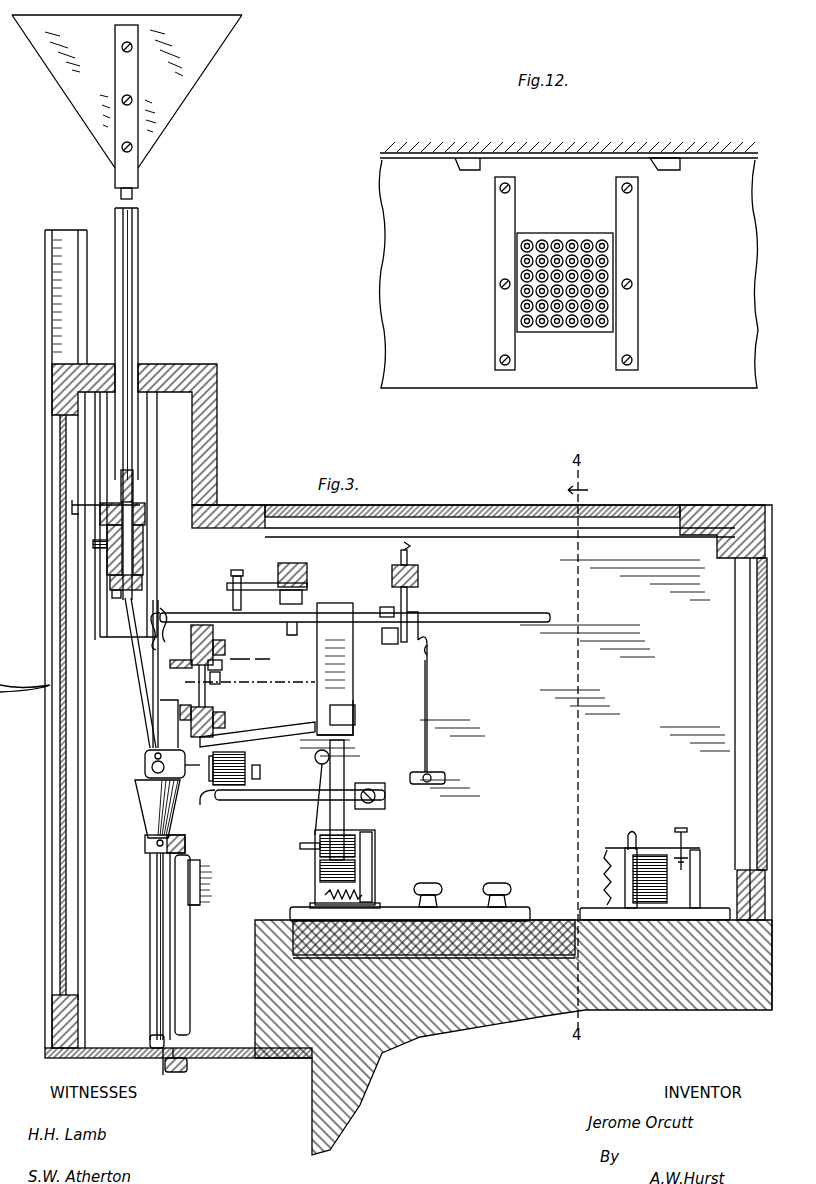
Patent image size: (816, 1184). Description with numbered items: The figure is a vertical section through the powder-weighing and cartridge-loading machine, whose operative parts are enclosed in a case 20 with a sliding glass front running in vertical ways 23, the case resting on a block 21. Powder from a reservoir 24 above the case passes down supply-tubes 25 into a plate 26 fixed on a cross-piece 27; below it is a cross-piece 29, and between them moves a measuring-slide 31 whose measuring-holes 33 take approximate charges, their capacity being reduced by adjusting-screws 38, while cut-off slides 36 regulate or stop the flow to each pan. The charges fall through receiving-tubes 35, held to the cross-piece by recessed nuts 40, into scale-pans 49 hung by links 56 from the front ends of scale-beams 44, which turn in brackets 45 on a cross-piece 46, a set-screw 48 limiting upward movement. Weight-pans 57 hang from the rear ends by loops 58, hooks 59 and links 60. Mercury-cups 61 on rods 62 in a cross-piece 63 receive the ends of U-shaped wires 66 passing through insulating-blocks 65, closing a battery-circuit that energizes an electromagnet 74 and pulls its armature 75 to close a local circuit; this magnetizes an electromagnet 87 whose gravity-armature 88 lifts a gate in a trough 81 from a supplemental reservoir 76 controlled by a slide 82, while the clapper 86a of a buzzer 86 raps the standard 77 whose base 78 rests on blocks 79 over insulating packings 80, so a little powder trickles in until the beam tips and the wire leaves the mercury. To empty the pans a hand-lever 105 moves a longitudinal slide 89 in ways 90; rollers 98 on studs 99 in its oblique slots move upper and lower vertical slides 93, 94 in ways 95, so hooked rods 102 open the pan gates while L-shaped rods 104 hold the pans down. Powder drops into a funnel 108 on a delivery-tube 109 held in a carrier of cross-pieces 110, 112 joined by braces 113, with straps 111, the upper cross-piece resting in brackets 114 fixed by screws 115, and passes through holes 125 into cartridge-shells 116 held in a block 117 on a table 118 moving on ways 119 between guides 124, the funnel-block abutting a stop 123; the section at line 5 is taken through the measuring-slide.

In FIG. 3, the lever 5 is at (144, 645).
In FIG. 3, the case 20 is at (515, 678).
In FIG. 3, the block 21 is at (312, 1128).
In FIG. 12, the block 21 is at (569, 138).
In FIG. 3, the vertical ways 23 is at (58, 628).
In FIG. 3, the reservoir 24 is at (190, 68).
In FIG. 3, the supply-tubes 25 is at (135, 268).
In FIG. 3, the plate 26 is at (135, 498).
In FIG. 3, the cross-piece 27 is at (147, 518).
In FIG. 3, the cross-piece 29 is at (143, 577).
In FIG. 3, the measuring-slide 31 is at (145, 556).
In FIG. 3, the measuring-holes 33 is at (143, 686).
In FIG. 3, the receiving-tubes 35 is at (152, 700).
In FIG. 3, the cut-off slides 36 is at (88, 508).
In FIG. 3, the adjusting-screws 38 is at (100, 546).
In FIG. 3, the recessed nuts 40 is at (115, 594).
In FIG. 3, the scale-beams 44 is at (262, 622).
In FIG. 3, the brackets 45 is at (302, 604).
In FIG. 3, the cross-piece 46 is at (292, 563).
In FIG. 3, the set-screw 48 is at (237, 570).
In FIG. 3, the scale-pans 49 is at (145, 762).
In FIG. 3, the links 56 is at (160, 625).
In FIG. 3, the weight-pans 57 is at (446, 773).
In FIG. 3, the loops 58 is at (430, 700).
In FIG. 3, the hooks 59 is at (432, 652).
In FIG. 3, the links 60 is at (430, 640).
In FIG. 3, the mercury-cups 61 is at (386, 647).
In FIG. 3, the rods 62 is at (412, 621).
In FIG. 3, the cross-piece 63 is at (420, 566).
In FIG. 3, the insulating-blocks 65 is at (386, 606).
In FIG. 3, the U-shaped pieces of wire 66 is at (382, 632).
In FIG. 3, the electromagnets 74 is at (640, 852).
In FIG. 3, the armature 75 is at (690, 830).
In FIG. 3, the supplemental powder-reservoirs 76 is at (355, 708).
In FIG. 3, the standards 77 is at (340, 780).
In FIG. 3, the bases 78 is at (440, 905).
In FIG. 3, the blocks 79 is at (525, 906).
In FIG. 3, the insulating packings 80 is at (460, 960).
In FIG. 3, the troughs 81 is at (283, 725).
In FIG. 3, the slide 82 is at (342, 717).
In FIG. 3, the buzzer 86 is at (318, 856).
In FIG. 3, the clapper 86a is at (330, 756).
In FIG. 3, the electromagnet 87 is at (240, 755).
In FIG. 3, the armatures 88 is at (260, 776).
In FIG. 3, the longitudinal slide 89 is at (250, 685).
In FIG. 3, the ways 90 is at (225, 722).
In FIG. 3, the upper vertical slide 93 is at (196, 645).
In FIG. 3, the lower vertical slide 94 is at (185, 762).
In FIG. 3, the ways 95 is at (182, 670).
In FIG. 3, the rollers 98 is at (222, 668).
In FIG. 3, the studs 99 is at (250, 658).
In FIG. 3, the hooked rods 102 is at (181, 808).
In FIG. 3, the L-shaped rods 104 is at (170, 715).
In FIG. 3, the hand-lever 105 is at (48, 684).
In FIG. 3, the funnel 108 is at (145, 798).
In FIG. 3, the delivery-tube 109 is at (150, 905).
In FIG. 3, the cross-piece 110 is at (150, 1032).
In FIG. 3, the straps 111 is at (145, 845).
In FIG. 3, the cross-piece 112 is at (185, 840).
In FIG. 3, the braces 113 is at (190, 1003).
In FIG. 3, the brackets 114 is at (200, 892).
In FIG. 3, the screws 115 is at (200, 866).
In FIG. 12, the cartridge-shells 116 is at (527, 306).
In FIG. 12, the block 117 is at (578, 332).
In FIG. 12, the table 118 is at (457, 380).
In FIG. 12, the ways 119 is at (680, 190).
In FIG. 3, the stop 123 is at (187, 1068).
In FIG. 12, the guides 124 is at (497, 252).
In FIG. 3, the holes 125 is at (165, 1072).